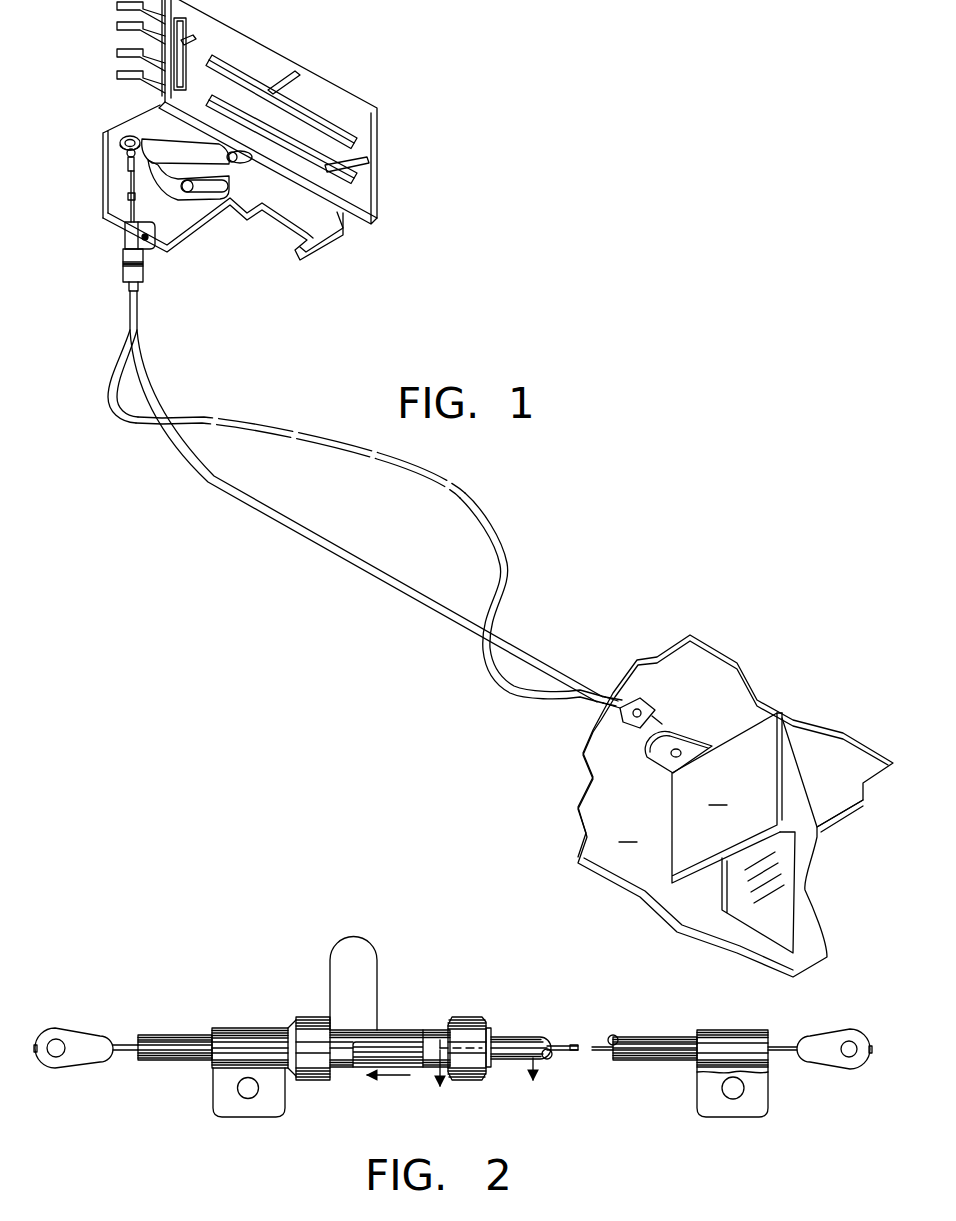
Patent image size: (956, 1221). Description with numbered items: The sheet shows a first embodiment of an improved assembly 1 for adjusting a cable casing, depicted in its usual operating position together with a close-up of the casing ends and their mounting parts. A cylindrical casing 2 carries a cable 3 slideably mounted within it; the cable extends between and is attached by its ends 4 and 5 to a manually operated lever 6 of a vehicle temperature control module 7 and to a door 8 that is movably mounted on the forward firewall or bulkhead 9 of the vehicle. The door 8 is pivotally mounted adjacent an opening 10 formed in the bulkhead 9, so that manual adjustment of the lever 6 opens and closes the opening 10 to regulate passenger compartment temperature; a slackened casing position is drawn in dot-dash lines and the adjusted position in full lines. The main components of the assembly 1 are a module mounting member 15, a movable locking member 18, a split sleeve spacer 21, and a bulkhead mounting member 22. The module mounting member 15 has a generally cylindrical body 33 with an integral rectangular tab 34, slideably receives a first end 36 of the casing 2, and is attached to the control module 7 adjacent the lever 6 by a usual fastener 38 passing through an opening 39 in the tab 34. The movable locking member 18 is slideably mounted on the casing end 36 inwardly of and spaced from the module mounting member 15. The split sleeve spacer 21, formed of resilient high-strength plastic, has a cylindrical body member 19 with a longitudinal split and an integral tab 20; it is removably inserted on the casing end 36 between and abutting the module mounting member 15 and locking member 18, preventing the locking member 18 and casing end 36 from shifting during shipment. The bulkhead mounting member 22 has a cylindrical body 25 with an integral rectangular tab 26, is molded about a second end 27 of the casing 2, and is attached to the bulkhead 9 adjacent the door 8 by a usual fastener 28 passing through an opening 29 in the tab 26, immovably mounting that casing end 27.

In FIG. 1, the assembly for adjustment of a cable casing 1 is at (97, 247).
In FIG. 2, the assembly for adjustment of a cable casing 1 is at (338, 1093).
In FIG. 1, the casing 2 is at (475, 497).
In FIG. 2, the casing 2 is at (510, 1033).
In FIG. 1, the cable 3 is at (137, 176).
In FIG. 2, the cable 3 is at (113, 1043).
In FIG. 1, the cable end 4 is at (132, 182).
In FIG. 2, the cable end 4 is at (130, 1050).
In FIG. 1, the cable end 5 is at (670, 735).
In FIG. 2, the cable end 5 is at (778, 1050).
In FIG. 1, the manually operated lever 6 is at (152, 157).
In FIG. 1, the vehicle temperature control module 7 is at (377, 160).
In FIG. 1, the door 8 is at (727, 798).
In FIG. 1, the bulkhead 9 is at (735, 805).
In FIG. 1, the opening 10 is at (780, 860).
In FIG. 2, the opening 10 is at (486, 1087).
In FIG. 1, the module mounting member 15 is at (143, 255).
In FIG. 2, the module mounting member 15 is at (239, 1026).
In FIG. 1, the movable locking member 18 is at (143, 278).
In FIG. 2, the movable locking member 18 is at (462, 1015).
In FIG. 2, the body member 19 is at (425, 1030).
In FIG. 2, the tab 20 is at (352, 957).
In FIG. 2, the split sleeve spacer 21 is at (387, 1027).
In FIG. 1, the bulkhead mounting member 22 is at (640, 708).
In FIG. 2, the bulkhead mounting member 22 is at (731, 1026).
In FIG. 2, the body 25 is at (740, 1047).
In FIG. 2, the rectangular tab 26 is at (703, 1083).
In FIG. 1, the second end of cable casing 27 is at (618, 700).
In FIG. 2, the second end of cable casing 27 is at (642, 1052).
In FIG. 1, the fastener 28 is at (657, 707).
In FIG. 2, the opening 29 is at (735, 1095).
In FIG. 2, the body 33 is at (267, 1047).
In FIG. 2, the rectangular tab 34 is at (258, 1110).
In FIG. 1, the first end of casing 36 is at (130, 310).
In FIG. 2, the first end of casing 36 is at (153, 1045).
In FIG. 1, the fastener 38 is at (147, 237).
In FIG. 2, the opening 39 is at (240, 1090).